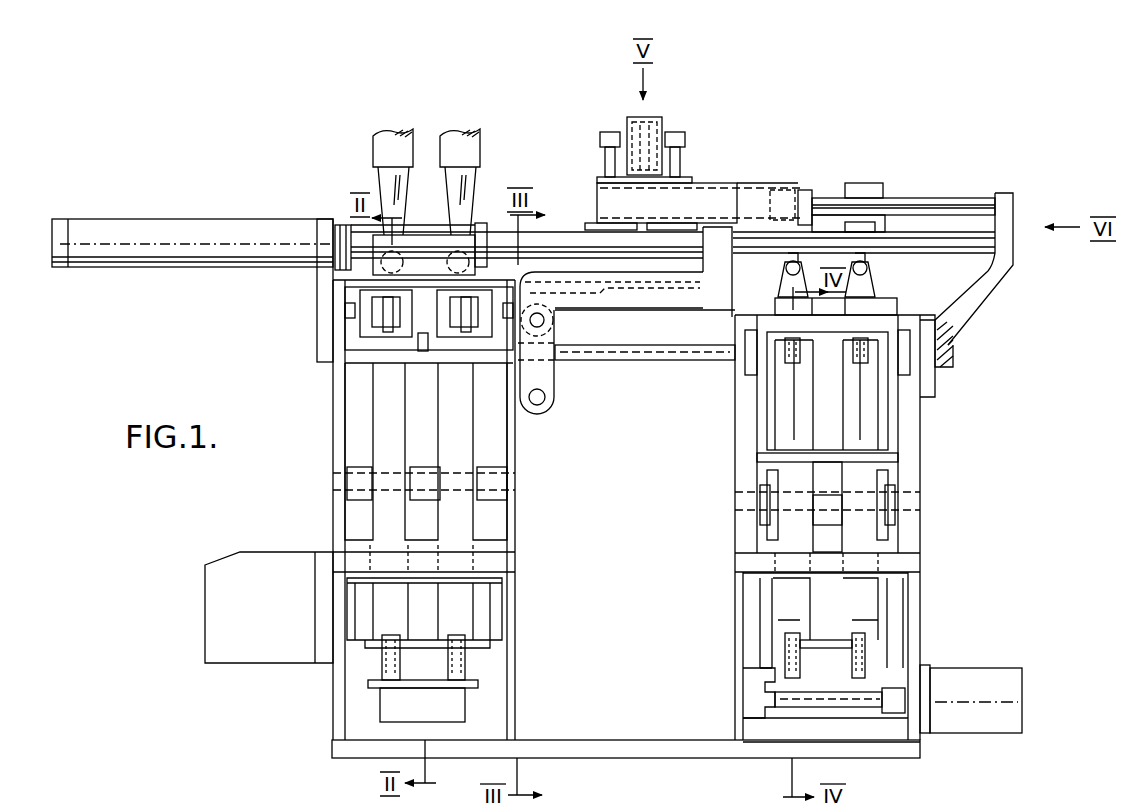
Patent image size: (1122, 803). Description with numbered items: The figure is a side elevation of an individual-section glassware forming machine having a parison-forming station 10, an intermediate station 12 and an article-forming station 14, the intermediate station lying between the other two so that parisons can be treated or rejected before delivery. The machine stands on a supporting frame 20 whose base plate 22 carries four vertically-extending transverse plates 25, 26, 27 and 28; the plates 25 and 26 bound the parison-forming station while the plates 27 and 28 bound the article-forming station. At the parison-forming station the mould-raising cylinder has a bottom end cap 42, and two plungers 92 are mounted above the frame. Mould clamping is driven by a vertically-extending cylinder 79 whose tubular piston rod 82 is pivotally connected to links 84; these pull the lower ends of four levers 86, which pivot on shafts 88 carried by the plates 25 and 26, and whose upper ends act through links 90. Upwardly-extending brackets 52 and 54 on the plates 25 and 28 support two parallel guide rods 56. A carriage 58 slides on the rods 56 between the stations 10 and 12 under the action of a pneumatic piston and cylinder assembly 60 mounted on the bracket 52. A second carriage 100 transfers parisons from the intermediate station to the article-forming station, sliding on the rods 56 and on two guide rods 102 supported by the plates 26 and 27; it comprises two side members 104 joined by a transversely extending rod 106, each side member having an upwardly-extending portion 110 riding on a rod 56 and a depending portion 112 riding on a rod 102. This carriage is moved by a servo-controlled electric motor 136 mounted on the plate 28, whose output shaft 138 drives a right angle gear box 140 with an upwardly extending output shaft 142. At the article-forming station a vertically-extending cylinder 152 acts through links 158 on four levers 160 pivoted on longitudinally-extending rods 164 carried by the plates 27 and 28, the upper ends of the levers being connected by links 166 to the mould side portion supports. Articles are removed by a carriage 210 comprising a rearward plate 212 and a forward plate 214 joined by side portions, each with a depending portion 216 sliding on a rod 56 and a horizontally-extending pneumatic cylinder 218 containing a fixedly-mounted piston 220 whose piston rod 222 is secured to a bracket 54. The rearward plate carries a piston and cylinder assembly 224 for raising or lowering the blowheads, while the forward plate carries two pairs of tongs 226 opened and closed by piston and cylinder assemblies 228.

The parison-forming station 10 is at (425, 122).
The intermediate station 12 is at (590, 100).
The article-forming station 14 is at (815, 178).
The supporting frame 20 is at (303, 730).
The base plate 22 is at (602, 746).
The transverse plate 25 is at (337, 518).
The transverse plate 26 is at (512, 515).
The transverse plate 27 is at (745, 523).
The transverse plate 28 is at (913, 527).
The bottom end cap 42 is at (422, 705).
The bracket 52 is at (320, 280).
The bracket 54 is at (990, 300).
The guide rods 56 is at (510, 237).
The carriage 58 is at (362, 233).
The pneumatic piston and cylinder assembly 60 is at (135, 228).
The vertically-extending cylinder 79 is at (482, 613).
The tubular piston rod 82 is at (472, 675).
The links 84 is at (387, 665).
The levers 86 is at (457, 405).
The shafts 88 is at (358, 483).
The links 90 is at (387, 310).
The plungers 92 is at (453, 200).
The carriage 100 is at (655, 312).
The guide rods 102 is at (590, 352).
The side members 104 is at (690, 302).
The transversely extending rod 106 is at (537, 405).
The upwardly-extending portion 110 is at (717, 240).
The depending portion 112 is at (550, 387).
The electric motor 136 is at (1000, 675).
The output shaft 138 is at (878, 750).
The right angle gear box 140 is at (763, 700).
The output shaft 142 is at (752, 632).
The vertically-extending cylinder 152 is at (828, 600).
The links 158 is at (860, 648).
The levers 160 is at (863, 413).
The longitudinally-extending rod 164 is at (920, 500).
The link 166 is at (860, 368).
The carriage 210 is at (793, 185).
The rearward plate 212 is at (602, 182).
The forward plate 214 is at (913, 203).
The depending portion 216 is at (812, 242).
The horizontally-extending pneumatic cylinder 218 is at (615, 205).
The fixedly-mounted piston 220 is at (775, 200).
The piston rod 222 is at (980, 203).
The piston and cylinder assembly 224 is at (655, 117).
The tongs 226 is at (805, 297).
The piston and cylinder assemblies 228 is at (812, 200).